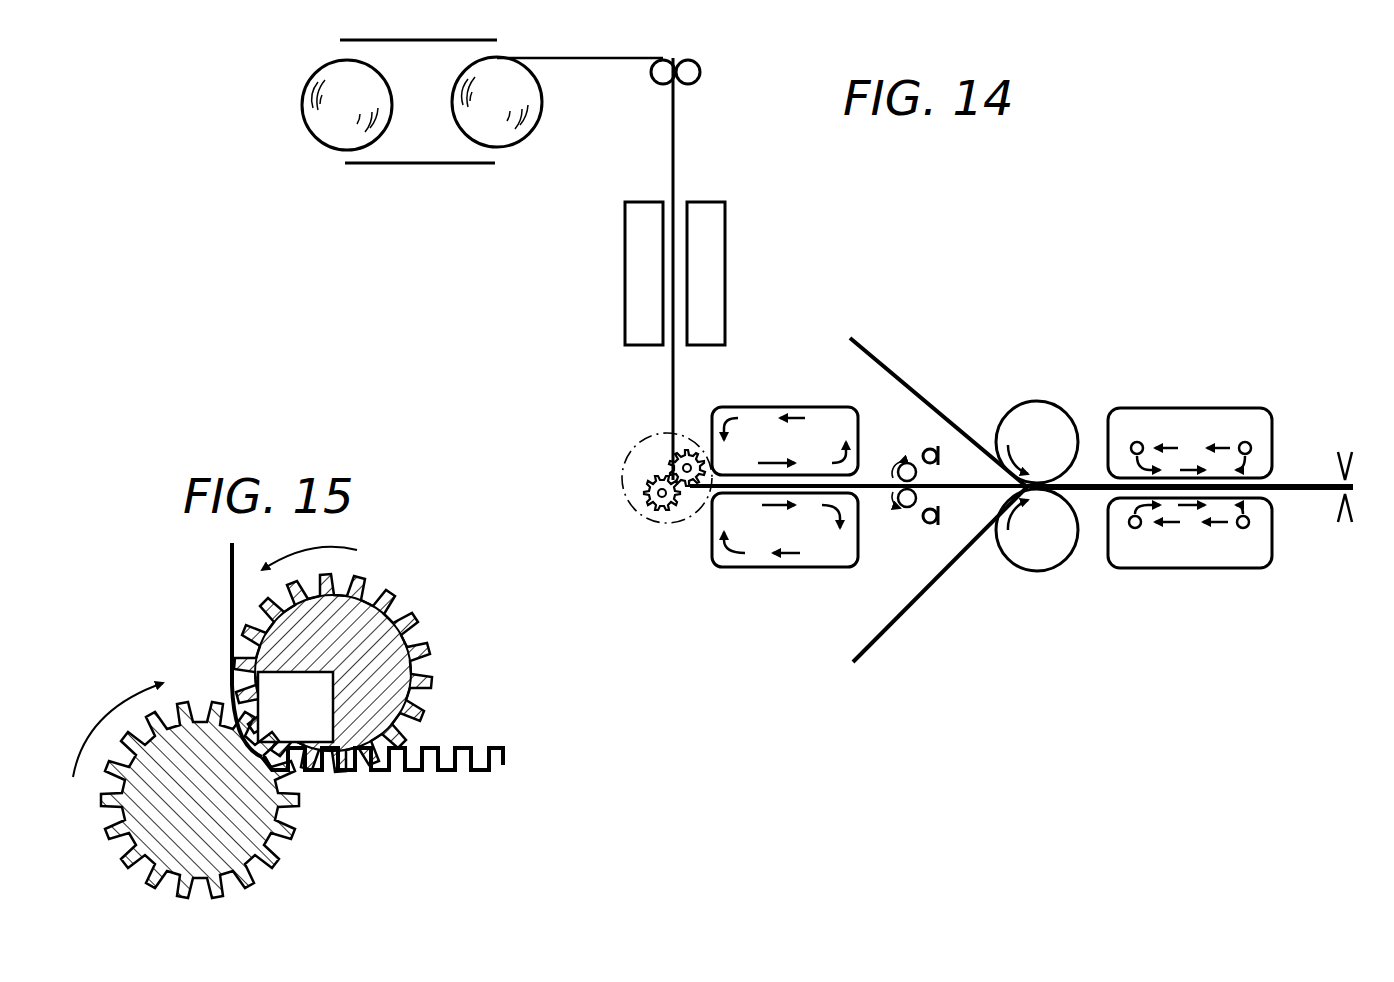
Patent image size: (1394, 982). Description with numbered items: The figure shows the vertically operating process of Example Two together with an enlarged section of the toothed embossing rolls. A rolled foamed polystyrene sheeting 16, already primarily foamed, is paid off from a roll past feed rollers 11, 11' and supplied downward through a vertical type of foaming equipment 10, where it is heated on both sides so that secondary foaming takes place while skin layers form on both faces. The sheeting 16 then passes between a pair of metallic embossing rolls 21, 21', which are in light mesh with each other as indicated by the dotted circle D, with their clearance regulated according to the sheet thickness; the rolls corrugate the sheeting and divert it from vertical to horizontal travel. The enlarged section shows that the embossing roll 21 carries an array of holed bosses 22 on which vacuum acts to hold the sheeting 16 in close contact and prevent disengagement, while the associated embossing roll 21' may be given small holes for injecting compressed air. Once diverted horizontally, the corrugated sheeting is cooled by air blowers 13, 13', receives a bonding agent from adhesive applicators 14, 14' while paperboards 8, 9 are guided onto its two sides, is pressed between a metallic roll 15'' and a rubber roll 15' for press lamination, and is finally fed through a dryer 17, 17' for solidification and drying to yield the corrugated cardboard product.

In FIG. 14, the paperboard 8 is at (930, 592).
In FIG. 14, the paperboard 9 is at (915, 392).
In FIG. 14, the vertical type of foaming equipment 10 is at (632, 270).
In FIG. 14, the feed roller 11 is at (722, 93).
In FIG. 14, the feed roller 11' is at (636, 98).
In FIG. 14, the air blower 13 is at (785, 404).
In FIG. 14, the air blower 13' is at (785, 564).
In FIG. 14, the adhesive applicator 14 is at (896, 425).
In FIG. 14, the adhesive applicator 14' is at (914, 533).
In FIG. 14, the rubber roll 15' is at (1037, 566).
In FIG. 14, the metallic roll 15'' is at (1037, 411).
In FIG. 14, the foamed polystyrene sheeting 16 is at (362, 133).
In FIG. 15, the foamed polystyrene sheeting 16 is at (228, 600).
In FIG. 14, the dryer 17 is at (1190, 410).
In FIG. 14, the lower cooling chamber 17' is at (1190, 570).
In FIG. 14, the embossing roll 21 is at (643, 441).
In FIG. 15, the embossing roll 21 is at (362, 673).
In FIG. 14, the embossing roll 21' is at (656, 524).
In FIG. 15, the embossing roll 21' is at (244, 800).
In FIG. 15, the holed bosses 22 is at (298, 772).
In FIG. 14, the detail region D is at (622, 483).